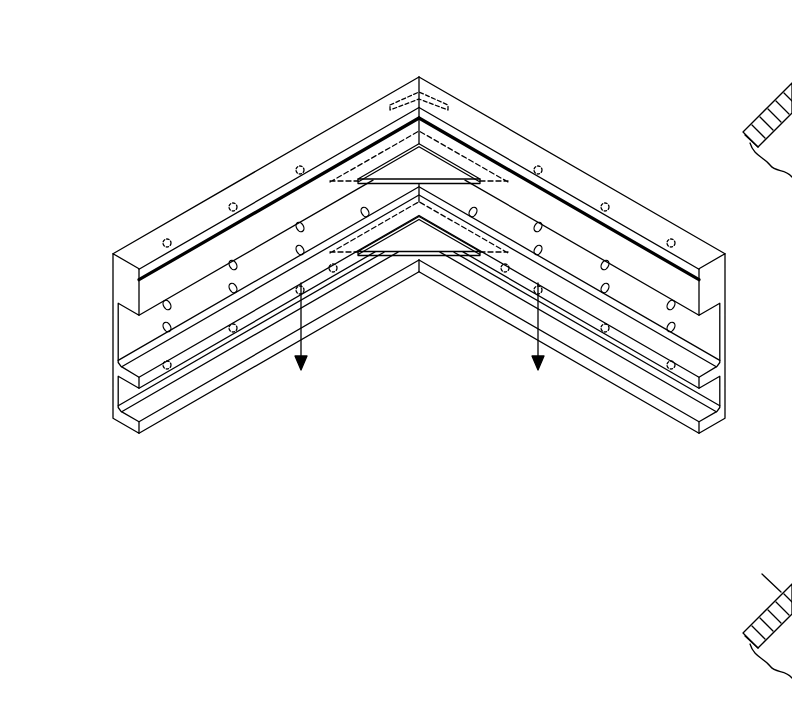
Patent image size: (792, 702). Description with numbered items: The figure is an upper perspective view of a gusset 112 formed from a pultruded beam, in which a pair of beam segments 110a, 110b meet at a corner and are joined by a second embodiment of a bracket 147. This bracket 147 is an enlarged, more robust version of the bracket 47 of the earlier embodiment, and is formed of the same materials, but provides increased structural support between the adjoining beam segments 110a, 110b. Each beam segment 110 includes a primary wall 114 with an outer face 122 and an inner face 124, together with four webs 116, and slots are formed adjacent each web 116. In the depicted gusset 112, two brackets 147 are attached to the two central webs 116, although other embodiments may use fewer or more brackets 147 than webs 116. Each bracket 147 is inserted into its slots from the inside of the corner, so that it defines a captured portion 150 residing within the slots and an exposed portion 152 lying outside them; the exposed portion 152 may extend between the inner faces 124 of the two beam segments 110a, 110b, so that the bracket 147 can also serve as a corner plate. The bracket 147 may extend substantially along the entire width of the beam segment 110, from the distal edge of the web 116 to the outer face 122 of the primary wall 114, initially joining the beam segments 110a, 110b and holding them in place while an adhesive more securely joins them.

The gusset 112 is at (247, 70).
The beam segment 110 is at (416, 273).
The first beam segment 110a is at (236, 162).
The second beam segment 110b is at (603, 162).
The primary wall 114 is at (104, 331).
The web 116 is at (148, 423).
The outer face 122 is at (126, 300).
The inner face 124 is at (130, 341).
The bracket 147 is at (442, 155).
The captured portion 150 is at (388, 140).
The exposed portion 152 is at (392, 165).
The bracket 47 is at (404, 96).